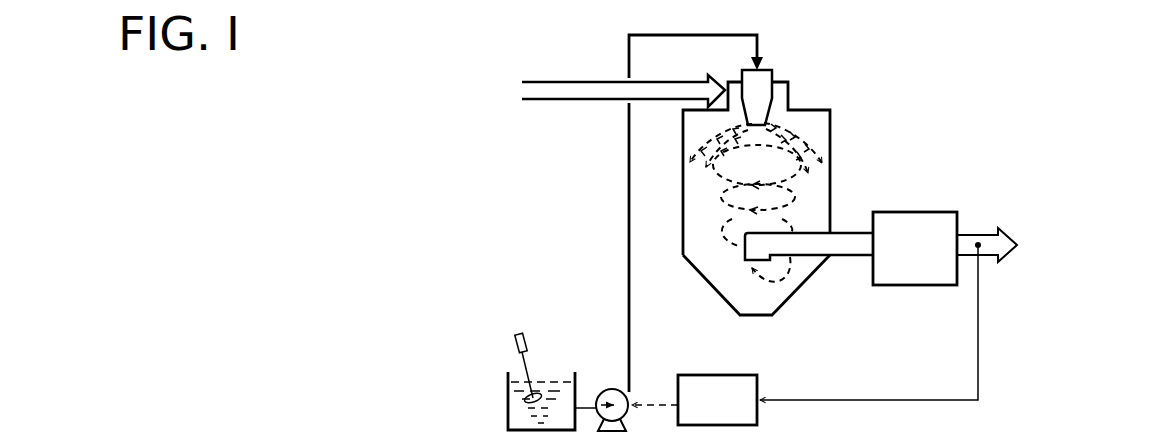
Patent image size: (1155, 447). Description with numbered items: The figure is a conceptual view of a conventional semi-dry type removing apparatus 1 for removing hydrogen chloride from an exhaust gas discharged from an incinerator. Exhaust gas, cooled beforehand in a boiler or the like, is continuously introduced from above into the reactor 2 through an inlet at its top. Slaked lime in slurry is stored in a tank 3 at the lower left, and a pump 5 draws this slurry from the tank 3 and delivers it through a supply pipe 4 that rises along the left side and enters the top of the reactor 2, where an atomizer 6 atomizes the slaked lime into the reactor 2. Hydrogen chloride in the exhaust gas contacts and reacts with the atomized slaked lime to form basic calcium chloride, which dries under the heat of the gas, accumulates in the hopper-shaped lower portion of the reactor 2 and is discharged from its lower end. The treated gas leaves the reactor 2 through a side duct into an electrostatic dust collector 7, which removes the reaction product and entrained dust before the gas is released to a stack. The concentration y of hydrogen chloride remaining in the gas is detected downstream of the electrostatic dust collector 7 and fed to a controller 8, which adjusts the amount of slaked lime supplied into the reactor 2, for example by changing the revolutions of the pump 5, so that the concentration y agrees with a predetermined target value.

The removing apparatus 1 is at (892, 82).
The reactor 2 is at (832, 130).
The tank 3 is at (508, 400).
The supply pipe 4 is at (628, 220).
The pump 5 is at (607, 390).
The atomizer 6 is at (760, 92).
The electrostatic dust collector 7 is at (913, 228).
The controller 8 is at (712, 375).
The concentration of hydrogen chloride y is at (978, 310).